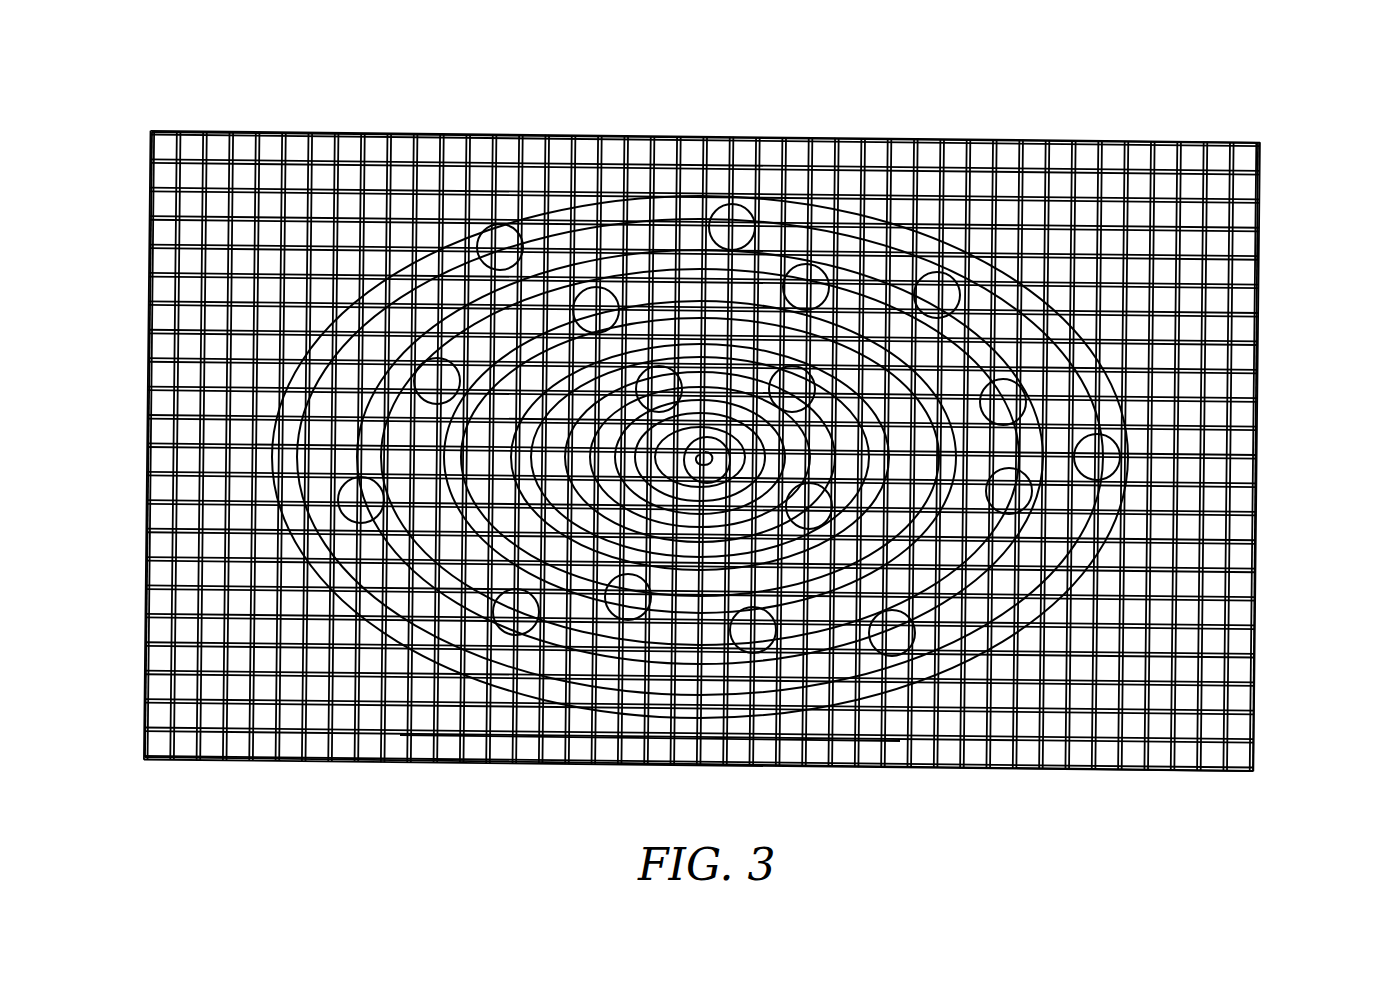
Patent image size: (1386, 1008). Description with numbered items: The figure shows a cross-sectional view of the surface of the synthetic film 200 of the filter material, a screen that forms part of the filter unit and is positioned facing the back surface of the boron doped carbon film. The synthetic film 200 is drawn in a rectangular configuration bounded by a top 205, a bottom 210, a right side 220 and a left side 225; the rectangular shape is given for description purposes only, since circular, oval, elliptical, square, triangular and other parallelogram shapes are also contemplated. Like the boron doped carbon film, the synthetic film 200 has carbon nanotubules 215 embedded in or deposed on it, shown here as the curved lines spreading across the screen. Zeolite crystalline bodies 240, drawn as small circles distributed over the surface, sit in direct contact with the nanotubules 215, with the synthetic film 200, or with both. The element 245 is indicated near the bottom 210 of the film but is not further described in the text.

The synthetic film 200 is at (728, 162).
The top 205 is at (537, 133).
The bottom 210 is at (480, 763).
The nanotubules 215 is at (900, 522).
The right side 220 is at (1262, 428).
The left side 225 is at (150, 424).
The zeolite crystalline bodies 240 is at (842, 255).
The grid line 245 is at (552, 730).